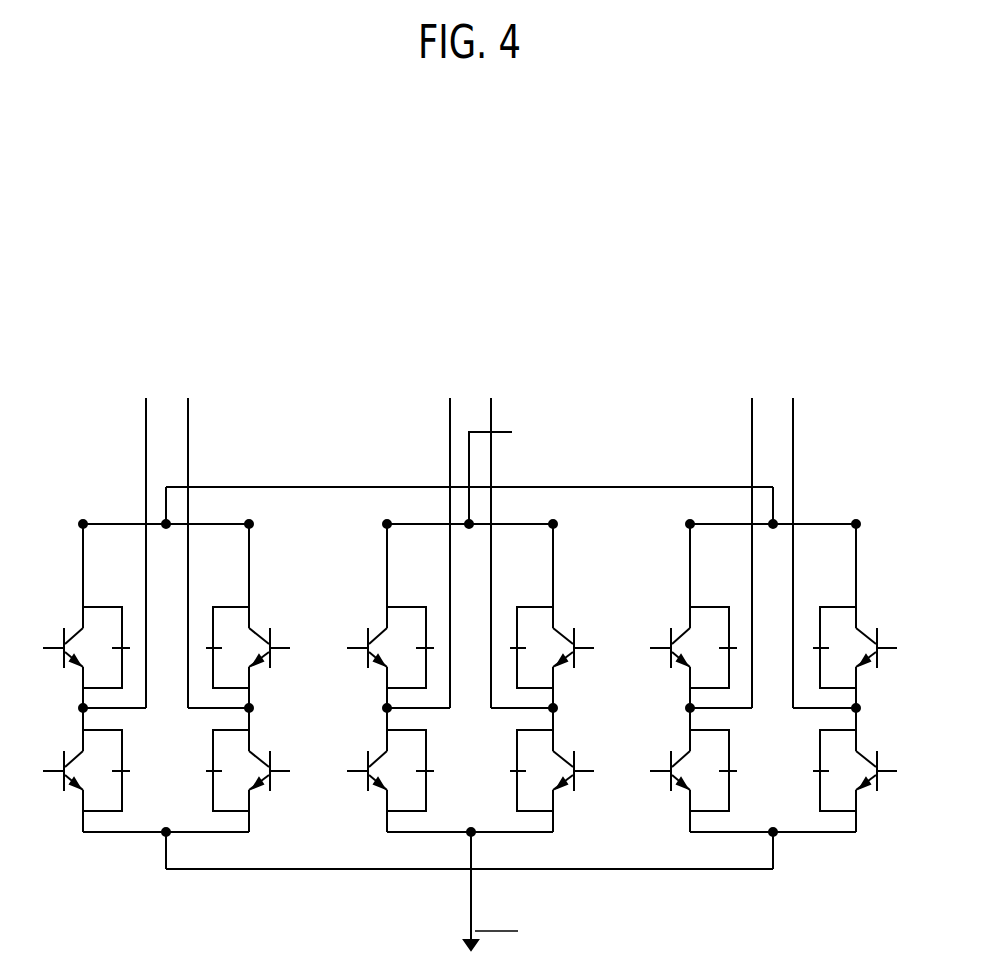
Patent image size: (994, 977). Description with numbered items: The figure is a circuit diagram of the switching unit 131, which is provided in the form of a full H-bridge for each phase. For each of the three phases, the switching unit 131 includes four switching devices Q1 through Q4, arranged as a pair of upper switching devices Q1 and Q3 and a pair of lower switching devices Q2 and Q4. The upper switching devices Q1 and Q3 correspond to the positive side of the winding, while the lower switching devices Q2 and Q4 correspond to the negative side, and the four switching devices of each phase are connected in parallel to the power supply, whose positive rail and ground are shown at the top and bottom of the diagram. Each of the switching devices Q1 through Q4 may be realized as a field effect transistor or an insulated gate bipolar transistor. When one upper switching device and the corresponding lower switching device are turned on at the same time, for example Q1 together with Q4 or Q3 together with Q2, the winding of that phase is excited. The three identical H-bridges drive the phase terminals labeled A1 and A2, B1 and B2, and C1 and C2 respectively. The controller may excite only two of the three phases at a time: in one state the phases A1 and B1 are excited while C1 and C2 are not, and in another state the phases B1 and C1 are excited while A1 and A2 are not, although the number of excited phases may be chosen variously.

The switching unit 131 is at (643, 342).
The upper switching device Q1 is at (390, 647).
The lower switching device Q2 is at (390, 770).
The upper switching device Q3 is at (551, 647).
The lower switching device Q4 is at (551, 770).
The phase A1 is at (86, 713).
The phase A2 is at (252, 713).
The phase B1 is at (388, 713).
The phase B2 is at (554, 713).
The phase C1 is at (693, 713).
The phase C2 is at (857, 713).